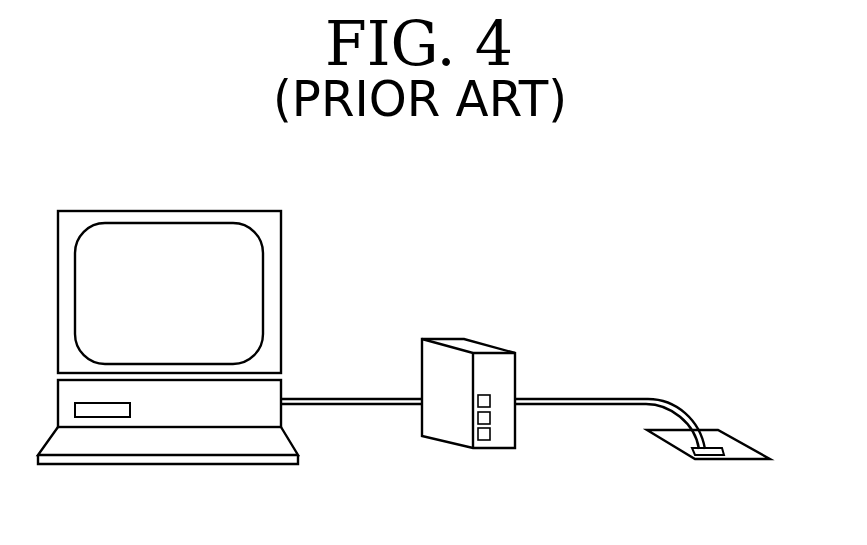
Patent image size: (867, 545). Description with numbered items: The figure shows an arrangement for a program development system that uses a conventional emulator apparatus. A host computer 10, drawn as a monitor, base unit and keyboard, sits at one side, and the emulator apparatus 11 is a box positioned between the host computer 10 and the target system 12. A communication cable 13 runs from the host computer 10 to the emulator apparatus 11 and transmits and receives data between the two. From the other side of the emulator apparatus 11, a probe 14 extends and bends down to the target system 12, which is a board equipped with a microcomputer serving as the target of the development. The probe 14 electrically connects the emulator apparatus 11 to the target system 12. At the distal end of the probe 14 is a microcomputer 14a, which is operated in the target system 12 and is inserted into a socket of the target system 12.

The host computer 10 is at (255, 208).
The emulator apparatus 11 is at (505, 328).
The target system 12 is at (728, 432).
The communication cable 13 is at (348, 397).
The probe 14 is at (653, 382).
The microcomputer 14a is at (717, 458).